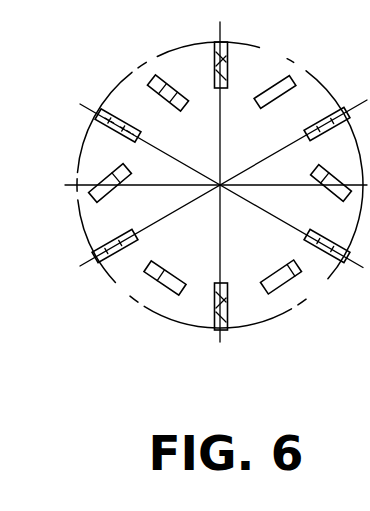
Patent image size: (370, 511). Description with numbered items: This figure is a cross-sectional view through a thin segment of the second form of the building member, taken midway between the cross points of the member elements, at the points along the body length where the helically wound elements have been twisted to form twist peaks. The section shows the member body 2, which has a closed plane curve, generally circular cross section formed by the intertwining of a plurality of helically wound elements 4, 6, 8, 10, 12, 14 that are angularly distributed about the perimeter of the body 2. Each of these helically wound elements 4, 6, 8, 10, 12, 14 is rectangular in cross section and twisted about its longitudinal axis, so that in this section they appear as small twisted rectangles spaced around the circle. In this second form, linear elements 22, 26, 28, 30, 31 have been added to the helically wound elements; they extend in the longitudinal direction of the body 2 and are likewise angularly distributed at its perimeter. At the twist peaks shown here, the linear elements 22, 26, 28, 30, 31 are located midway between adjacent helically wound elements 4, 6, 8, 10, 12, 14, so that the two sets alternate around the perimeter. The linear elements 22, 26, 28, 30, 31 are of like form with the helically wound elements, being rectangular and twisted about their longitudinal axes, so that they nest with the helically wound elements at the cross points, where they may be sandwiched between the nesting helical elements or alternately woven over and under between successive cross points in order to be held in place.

The member body 2 is at (335, 177).
The helically wound element 4 is at (113, 110).
The helically wound element 6 is at (228, 62).
The helically wound element 8 is at (332, 112).
The helically wound element 10 is at (333, 258).
The helically wound element 12 is at (214, 326).
The helically wound element 14 is at (116, 262).
The linear element 22 is at (284, 79).
The linear element 26 is at (283, 293).
The linear element 28 is at (167, 295).
The linear element 30 is at (107, 177).
The linear element 31 is at (166, 77).